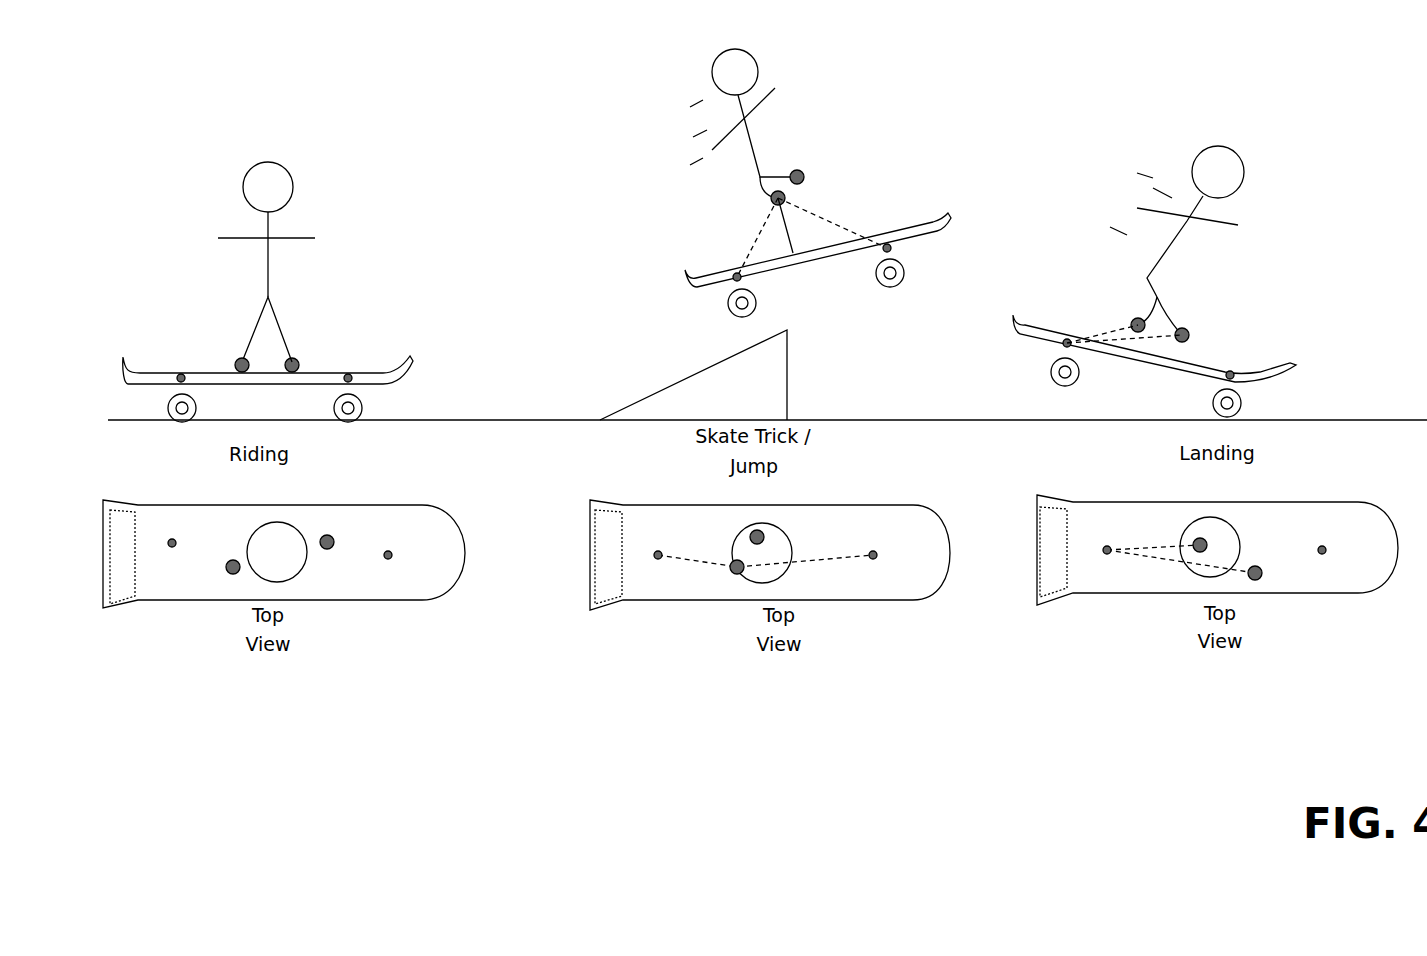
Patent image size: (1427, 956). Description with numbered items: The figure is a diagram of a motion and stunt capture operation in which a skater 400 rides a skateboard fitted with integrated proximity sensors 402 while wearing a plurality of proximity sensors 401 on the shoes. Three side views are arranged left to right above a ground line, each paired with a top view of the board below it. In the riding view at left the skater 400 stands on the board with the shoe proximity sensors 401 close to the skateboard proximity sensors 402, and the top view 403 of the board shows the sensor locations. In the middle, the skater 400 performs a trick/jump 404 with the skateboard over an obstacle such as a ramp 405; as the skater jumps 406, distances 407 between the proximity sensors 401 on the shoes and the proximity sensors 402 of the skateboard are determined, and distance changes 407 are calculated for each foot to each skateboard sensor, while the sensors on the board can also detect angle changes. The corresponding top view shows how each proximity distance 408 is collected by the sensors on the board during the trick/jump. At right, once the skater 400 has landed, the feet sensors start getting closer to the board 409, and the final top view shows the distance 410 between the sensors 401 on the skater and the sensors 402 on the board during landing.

The skater 400 is at (246, 166).
The proximity sensors 401 is at (241, 352).
The proximity sensors of skateboard 402 is at (179, 372).
The skateboard top view riding 403 is at (194, 507).
The trick/jump 404 is at (658, 126).
The ramp 405 is at (600, 409).
The skater jumps 406 is at (890, 171).
The distances 407 is at (744, 255).
The proximity distance 408 is at (706, 566).
The board landing 409 is at (1131, 165).
The distance 410 is at (1153, 541).